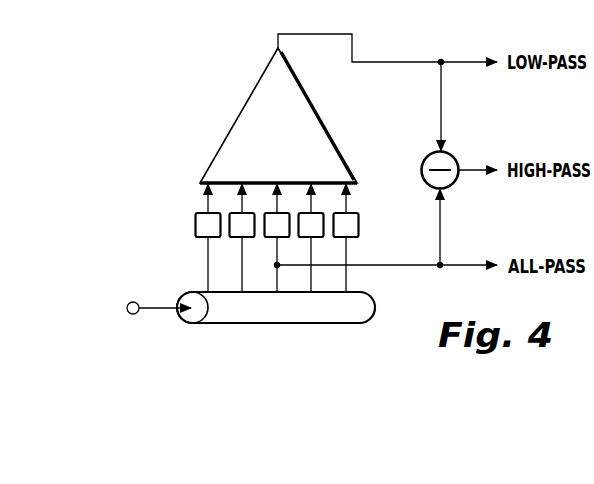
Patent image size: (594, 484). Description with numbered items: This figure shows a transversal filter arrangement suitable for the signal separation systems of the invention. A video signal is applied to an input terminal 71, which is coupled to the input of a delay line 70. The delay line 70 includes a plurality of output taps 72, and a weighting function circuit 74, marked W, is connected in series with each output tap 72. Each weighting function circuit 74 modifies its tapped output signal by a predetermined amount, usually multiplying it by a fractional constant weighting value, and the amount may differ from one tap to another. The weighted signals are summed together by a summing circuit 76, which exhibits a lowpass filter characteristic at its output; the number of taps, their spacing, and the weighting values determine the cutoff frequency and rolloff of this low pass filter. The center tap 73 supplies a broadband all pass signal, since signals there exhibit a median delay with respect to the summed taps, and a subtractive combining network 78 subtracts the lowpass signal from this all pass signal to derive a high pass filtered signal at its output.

The delay line 70 is at (368, 292).
The input terminal 71 is at (136, 314).
The output taps 72 is at (205, 265).
The center tap 73 is at (271, 260).
The weighting function circuit 74 is at (194, 219).
The summing circuit 76 is at (236, 120).
The subtractive combining network 78 is at (428, 157).